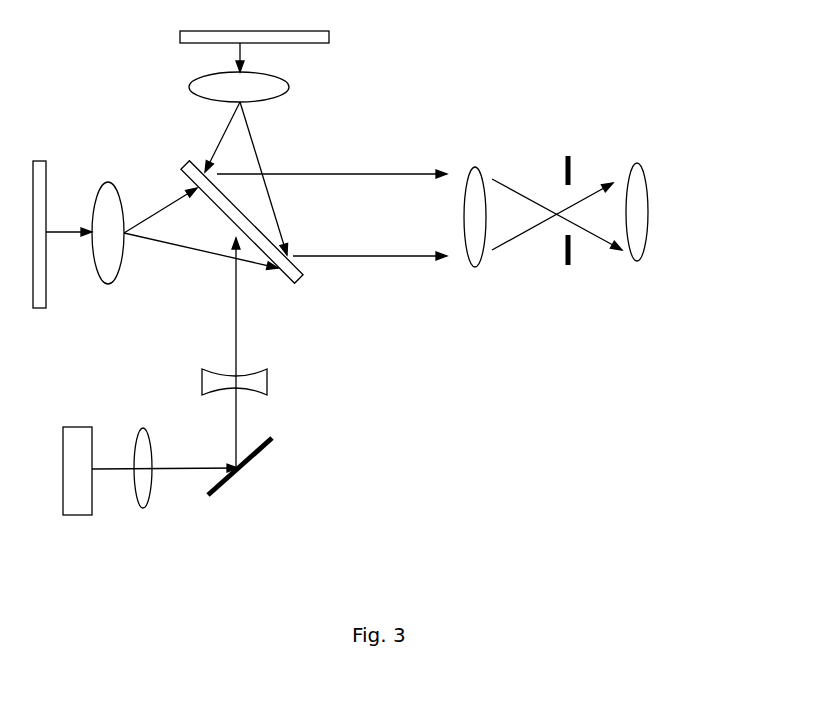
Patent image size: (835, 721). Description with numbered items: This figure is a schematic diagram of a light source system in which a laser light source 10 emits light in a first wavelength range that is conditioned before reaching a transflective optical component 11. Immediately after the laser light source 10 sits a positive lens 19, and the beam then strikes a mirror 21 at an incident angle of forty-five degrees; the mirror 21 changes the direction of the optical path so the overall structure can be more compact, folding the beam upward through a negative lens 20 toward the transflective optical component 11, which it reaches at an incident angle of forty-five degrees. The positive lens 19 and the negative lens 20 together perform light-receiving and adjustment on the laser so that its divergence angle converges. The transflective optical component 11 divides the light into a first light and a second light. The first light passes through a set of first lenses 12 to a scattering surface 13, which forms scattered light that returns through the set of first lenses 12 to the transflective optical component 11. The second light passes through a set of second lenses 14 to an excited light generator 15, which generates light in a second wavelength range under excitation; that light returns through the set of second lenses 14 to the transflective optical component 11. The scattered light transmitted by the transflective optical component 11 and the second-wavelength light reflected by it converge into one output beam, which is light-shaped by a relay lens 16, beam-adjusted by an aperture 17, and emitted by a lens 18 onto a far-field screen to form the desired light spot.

The laser light source 10 is at (75, 515).
The transflective optical component 11 is at (310, 271).
The set of first lenses 12 is at (108, 290).
The scattering surface 13 is at (40, 314).
The set of second lenses 14 is at (293, 95).
The excited light generator 15 is at (332, 36).
The relay lens 16 is at (475, 270).
The aperture 17 is at (568, 283).
The lens 18 is at (643, 268).
The positive lens 19 is at (143, 508).
The negative lens 20 is at (277, 376).
The mirror 21 is at (277, 440).